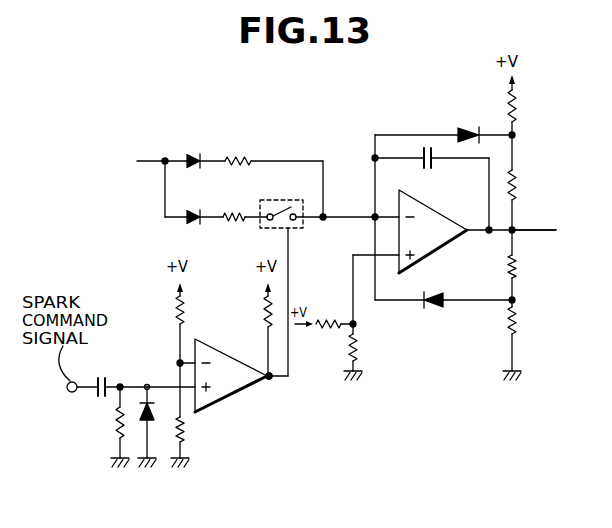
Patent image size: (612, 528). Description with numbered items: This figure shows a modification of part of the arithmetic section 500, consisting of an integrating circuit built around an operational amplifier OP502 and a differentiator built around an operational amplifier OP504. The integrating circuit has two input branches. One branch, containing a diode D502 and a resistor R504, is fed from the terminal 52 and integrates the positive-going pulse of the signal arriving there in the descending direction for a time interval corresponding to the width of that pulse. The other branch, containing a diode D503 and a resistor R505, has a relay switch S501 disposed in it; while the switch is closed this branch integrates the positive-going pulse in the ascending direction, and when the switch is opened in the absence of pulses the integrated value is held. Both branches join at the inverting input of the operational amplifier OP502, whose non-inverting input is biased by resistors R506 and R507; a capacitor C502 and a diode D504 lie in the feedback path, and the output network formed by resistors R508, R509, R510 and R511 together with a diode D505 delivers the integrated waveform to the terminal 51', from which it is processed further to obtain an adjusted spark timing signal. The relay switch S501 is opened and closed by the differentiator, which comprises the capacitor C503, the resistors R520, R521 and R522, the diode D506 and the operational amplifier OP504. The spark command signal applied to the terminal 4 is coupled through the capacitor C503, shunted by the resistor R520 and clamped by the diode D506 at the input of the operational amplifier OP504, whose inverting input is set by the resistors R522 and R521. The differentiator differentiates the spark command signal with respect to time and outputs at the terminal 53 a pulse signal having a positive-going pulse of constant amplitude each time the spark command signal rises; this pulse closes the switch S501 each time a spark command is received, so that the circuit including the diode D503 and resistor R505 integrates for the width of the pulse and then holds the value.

The arithmetic section 500 is at (104, 138).
The input terminal 52 is at (164, 160).
The diode D502 is at (194, 155).
The resistor R504 is at (242, 156).
The diode D503 is at (193, 222).
The resistor R505 is at (234, 221).
The relay switch S501 is at (300, 229).
The diode D504 is at (466, 130).
The resistor R508 is at (518, 108).
The capacitor C502 is at (430, 168).
The resistor R509 is at (518, 184).
The output terminal 51' is at (534, 216).
The operational amplifier OP502 is at (455, 237).
The resistor R510 is at (518, 268).
The diode D505 is at (433, 307).
The resistor R511 is at (518, 320).
The resistor R506 is at (317, 337).
The resistor R507 is at (357, 343).
The capacitor C503 is at (104, 377).
The spark command signal terminal 4 is at (72, 392).
The resistor R520 is at (114, 424).
The diode D506 is at (151, 421).
The resistor R522 is at (184, 321).
The operational amplifier OP504 is at (229, 398).
The resistor R521 is at (190, 430).
The output terminal 53 is at (271, 379).